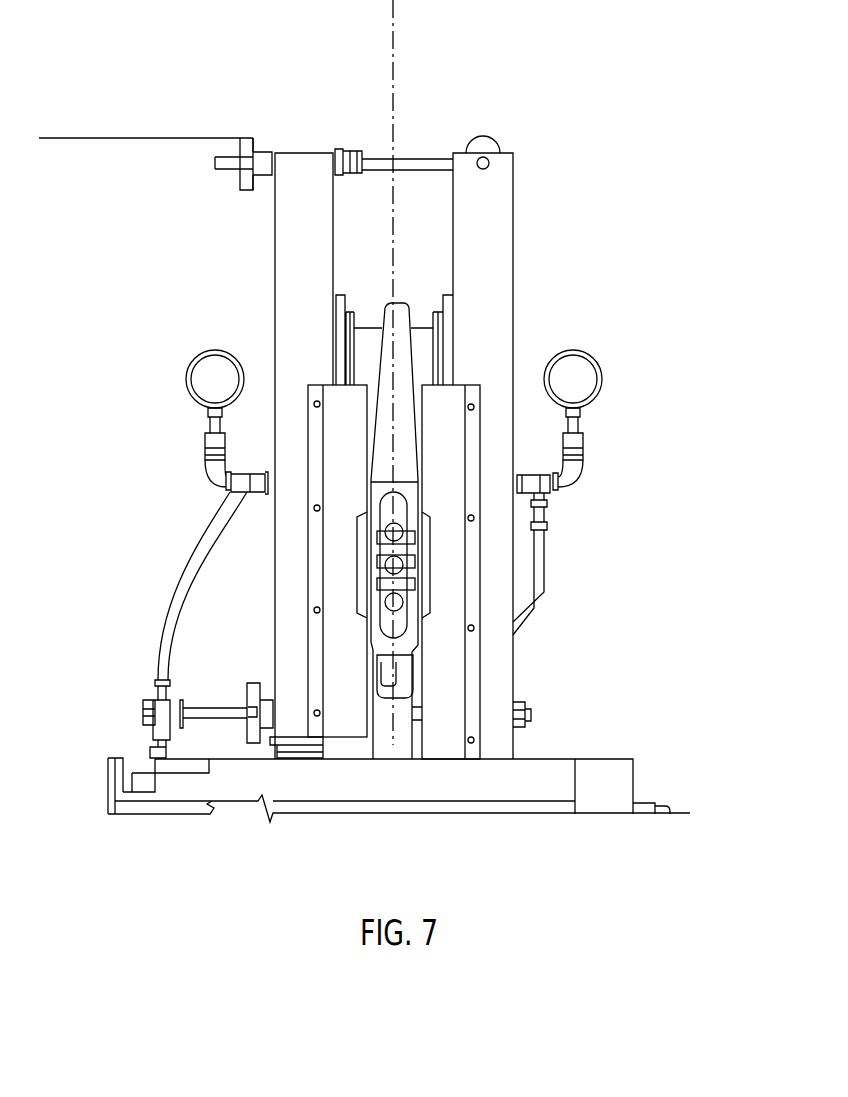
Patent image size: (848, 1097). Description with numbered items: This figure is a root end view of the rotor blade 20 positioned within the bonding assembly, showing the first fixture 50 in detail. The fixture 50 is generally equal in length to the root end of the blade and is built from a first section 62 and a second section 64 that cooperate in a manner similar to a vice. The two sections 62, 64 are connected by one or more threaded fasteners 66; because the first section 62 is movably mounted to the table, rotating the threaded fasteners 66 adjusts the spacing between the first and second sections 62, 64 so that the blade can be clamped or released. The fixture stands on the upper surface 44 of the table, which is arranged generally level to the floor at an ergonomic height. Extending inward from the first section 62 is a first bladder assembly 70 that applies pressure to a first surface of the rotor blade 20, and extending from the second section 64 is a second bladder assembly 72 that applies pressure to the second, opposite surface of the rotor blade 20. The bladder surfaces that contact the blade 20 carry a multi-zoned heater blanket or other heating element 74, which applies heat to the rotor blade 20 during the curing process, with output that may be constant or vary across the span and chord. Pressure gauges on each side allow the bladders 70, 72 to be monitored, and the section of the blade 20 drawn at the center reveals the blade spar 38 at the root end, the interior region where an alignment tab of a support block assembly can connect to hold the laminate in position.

The first fixture 50 is at (518, 82).
The threaded fasteners 66 is at (382, 162).
The first section 62 is at (283, 247).
The second section 64 is at (472, 297).
The heating element 74 is at (410, 352).
The first bladder assembly 70 is at (370, 350).
The second bladder assembly 72 is at (427, 360).
The rotor blade 20 is at (364, 455).
The blade spar 38 is at (393, 645).
The upper surface 44 is at (546, 780).